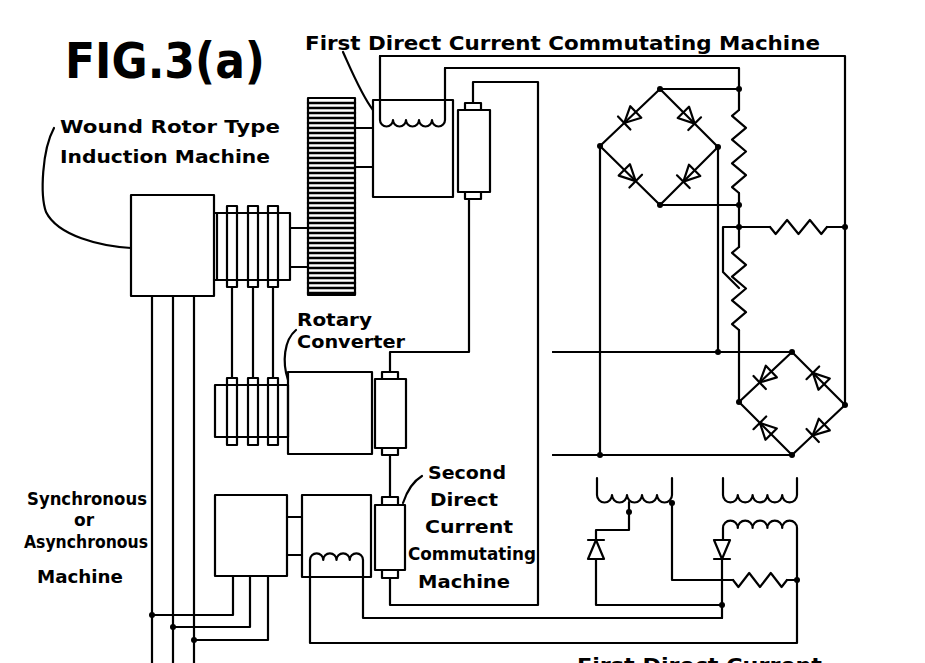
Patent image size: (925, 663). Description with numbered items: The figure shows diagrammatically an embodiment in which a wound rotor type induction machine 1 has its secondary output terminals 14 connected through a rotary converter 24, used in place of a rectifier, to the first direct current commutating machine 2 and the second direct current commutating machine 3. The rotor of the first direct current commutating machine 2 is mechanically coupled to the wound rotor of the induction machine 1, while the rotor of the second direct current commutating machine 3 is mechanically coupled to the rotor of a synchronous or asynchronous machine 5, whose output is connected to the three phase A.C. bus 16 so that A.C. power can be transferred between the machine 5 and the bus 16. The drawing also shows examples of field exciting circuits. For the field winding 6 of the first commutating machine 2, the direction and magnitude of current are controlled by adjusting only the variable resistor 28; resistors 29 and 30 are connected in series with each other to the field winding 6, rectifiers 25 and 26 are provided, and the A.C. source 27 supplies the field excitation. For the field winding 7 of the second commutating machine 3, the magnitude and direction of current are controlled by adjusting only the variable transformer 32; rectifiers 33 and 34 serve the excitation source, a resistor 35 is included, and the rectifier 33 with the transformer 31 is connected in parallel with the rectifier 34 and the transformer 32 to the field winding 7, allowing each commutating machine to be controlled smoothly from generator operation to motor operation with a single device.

The wound rotor type induction machine 1 is at (174, 245).
The first direct current commutating machine 2 is at (422, 149).
The second direct current commutating machine 3 is at (353, 536).
The synchronous or asynchronous machine 5 is at (227, 567).
The field winding 6 is at (408, 124).
The field winding 7 is at (331, 568).
The secondary output terminals 14 is at (230, 291).
The three phase A.C. bus 16 is at (194, 367).
The rotary converter 24 is at (378, 348).
The rectifier 25 is at (735, 417).
The rectifier 26 is at (639, 147).
The A.C. source 27 is at (573, 403).
The variable resistor 28 is at (748, 300).
The resistor 29 is at (798, 230).
The resistor 30 is at (747, 134).
The transformer 31 is at (783, 500).
The variable transformer 32 is at (634, 498).
The rectifier 33 is at (734, 553).
The rectifier 34 is at (604, 553).
The resistor 35 is at (738, 589).